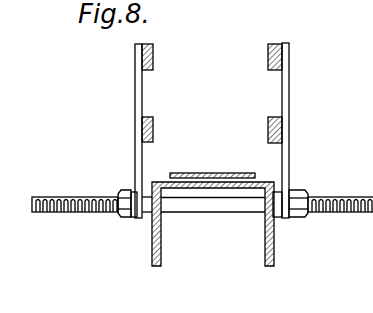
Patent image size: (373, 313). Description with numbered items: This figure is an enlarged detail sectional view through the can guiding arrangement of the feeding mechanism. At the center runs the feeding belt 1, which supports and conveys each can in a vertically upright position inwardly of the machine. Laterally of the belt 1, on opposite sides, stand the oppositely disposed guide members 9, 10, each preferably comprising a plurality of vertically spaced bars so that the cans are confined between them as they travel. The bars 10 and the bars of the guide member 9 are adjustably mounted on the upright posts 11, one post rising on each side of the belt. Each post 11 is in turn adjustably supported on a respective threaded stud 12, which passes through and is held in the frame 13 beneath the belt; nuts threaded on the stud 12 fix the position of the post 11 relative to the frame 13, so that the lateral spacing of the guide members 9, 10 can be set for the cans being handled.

The feeding belt 1 is at (252, 178).
The guide member 9 is at (268, 58).
The guide member bars 10 is at (146, 70).
The post 11 is at (135, 97).
The threaded stud 12 is at (67, 197).
The frame 13 is at (275, 249).